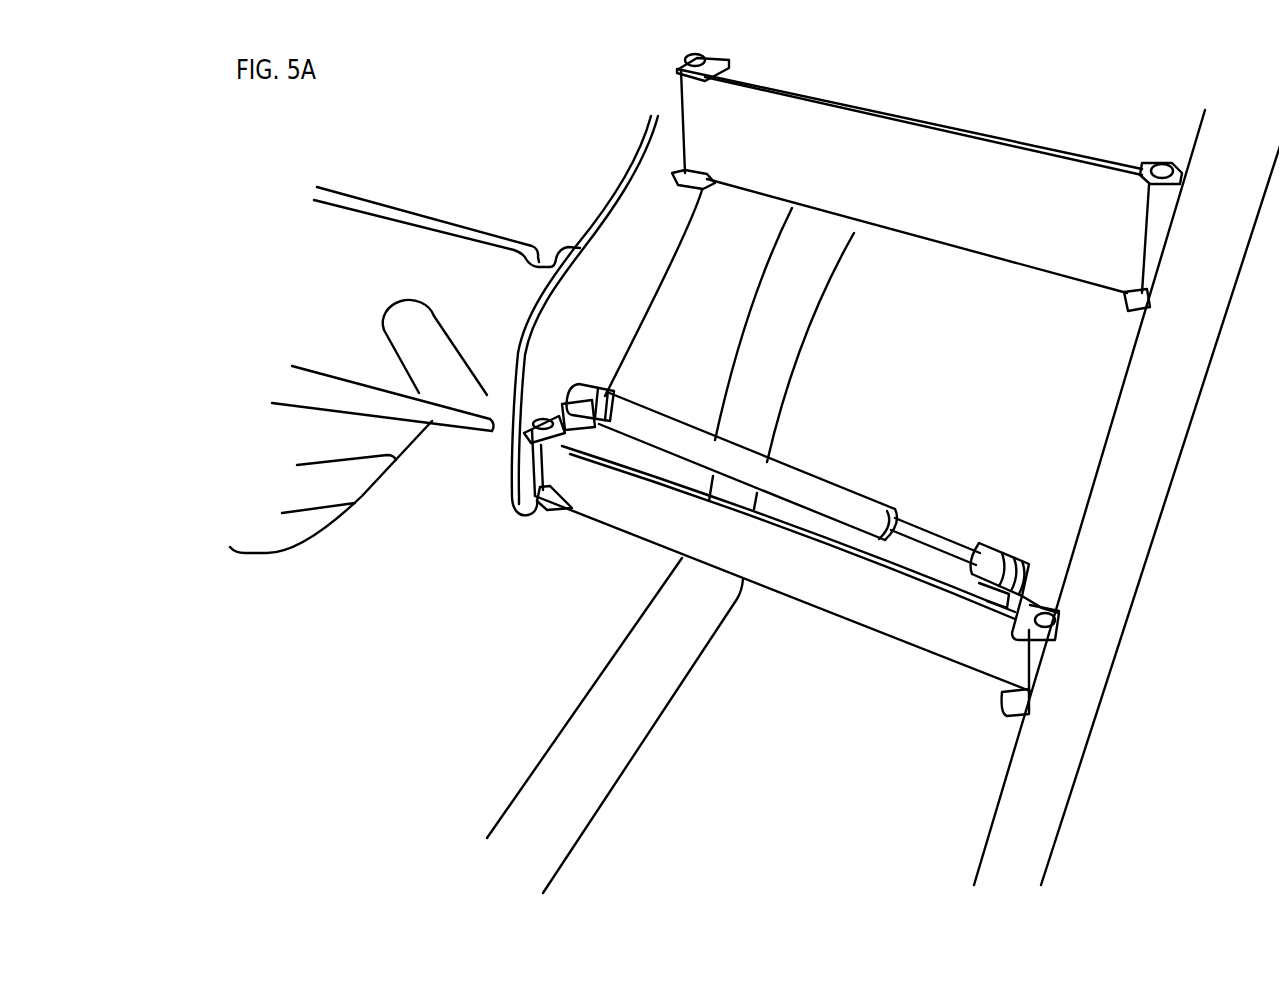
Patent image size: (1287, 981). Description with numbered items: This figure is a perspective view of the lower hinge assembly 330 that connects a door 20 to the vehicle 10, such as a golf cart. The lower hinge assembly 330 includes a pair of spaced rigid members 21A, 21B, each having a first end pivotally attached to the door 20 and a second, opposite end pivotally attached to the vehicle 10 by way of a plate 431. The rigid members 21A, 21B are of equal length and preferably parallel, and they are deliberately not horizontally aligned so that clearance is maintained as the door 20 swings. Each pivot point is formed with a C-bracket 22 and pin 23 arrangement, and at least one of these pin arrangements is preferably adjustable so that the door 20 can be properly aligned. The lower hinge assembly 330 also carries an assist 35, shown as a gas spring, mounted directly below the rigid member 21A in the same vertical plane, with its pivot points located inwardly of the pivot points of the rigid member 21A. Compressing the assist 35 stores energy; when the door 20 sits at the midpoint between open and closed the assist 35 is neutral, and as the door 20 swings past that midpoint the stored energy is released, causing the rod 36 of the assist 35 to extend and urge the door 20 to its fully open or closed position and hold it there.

The vehicle 10 is at (393, 667).
The door 20 is at (1168, 472).
The rigid member 21A is at (823, 585).
The rigid member 21B is at (913, 181).
The C-bracket 22 is at (722, 62).
The pin 23 is at (697, 55).
The assist 35 is at (848, 500).
The rod 36 is at (938, 535).
The lower hinge assembly 330 is at (863, 689).
The plate 431 is at (627, 289).